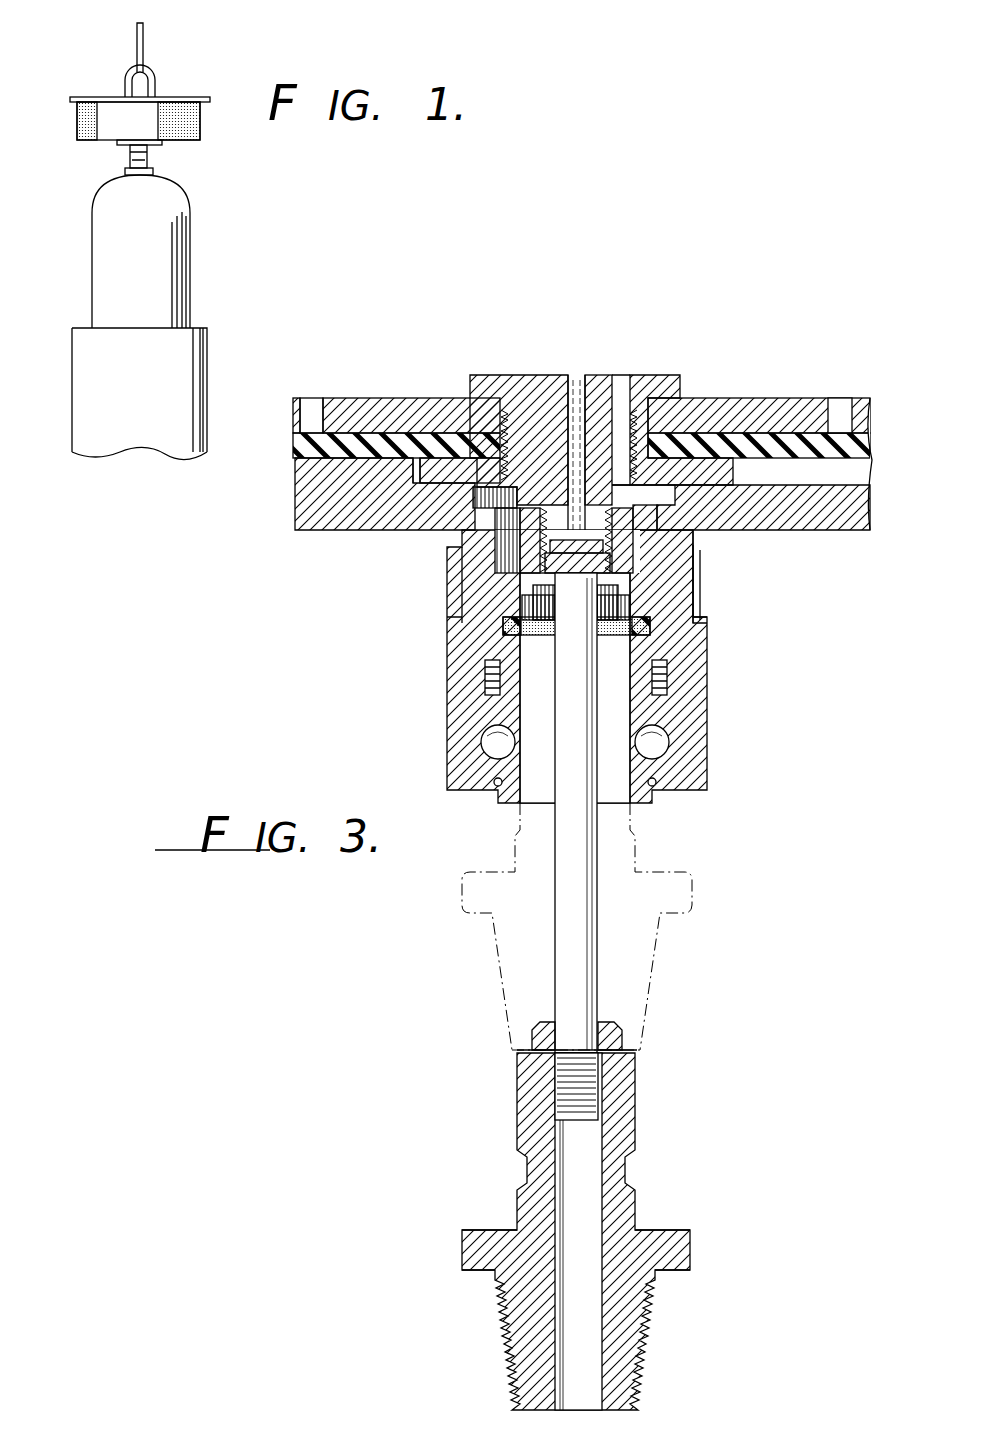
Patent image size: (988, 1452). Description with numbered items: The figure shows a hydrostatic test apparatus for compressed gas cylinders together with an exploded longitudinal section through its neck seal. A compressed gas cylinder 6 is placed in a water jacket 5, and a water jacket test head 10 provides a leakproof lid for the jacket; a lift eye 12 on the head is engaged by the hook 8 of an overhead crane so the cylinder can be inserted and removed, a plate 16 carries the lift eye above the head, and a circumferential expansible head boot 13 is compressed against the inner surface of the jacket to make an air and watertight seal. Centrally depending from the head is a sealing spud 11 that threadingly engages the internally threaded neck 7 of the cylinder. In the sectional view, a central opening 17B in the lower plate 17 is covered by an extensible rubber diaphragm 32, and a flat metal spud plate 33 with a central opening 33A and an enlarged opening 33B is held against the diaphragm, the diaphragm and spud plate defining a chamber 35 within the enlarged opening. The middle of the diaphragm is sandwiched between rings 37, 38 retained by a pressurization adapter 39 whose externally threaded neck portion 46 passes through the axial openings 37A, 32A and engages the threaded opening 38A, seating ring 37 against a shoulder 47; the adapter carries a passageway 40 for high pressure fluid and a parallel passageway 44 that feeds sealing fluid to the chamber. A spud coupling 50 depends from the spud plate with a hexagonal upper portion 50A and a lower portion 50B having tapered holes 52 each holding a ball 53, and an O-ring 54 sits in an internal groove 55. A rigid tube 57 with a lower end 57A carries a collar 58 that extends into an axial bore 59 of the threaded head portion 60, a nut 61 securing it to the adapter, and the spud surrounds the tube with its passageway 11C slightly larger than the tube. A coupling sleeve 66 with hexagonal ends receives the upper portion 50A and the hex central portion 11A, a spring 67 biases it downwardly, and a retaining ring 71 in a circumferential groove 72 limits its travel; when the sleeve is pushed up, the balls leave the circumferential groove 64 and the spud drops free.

In FIG. 1, the water jacket 5 is at (107, 353).
In FIG. 1, the compressed gas cylinder 6 is at (158, 262).
In FIG. 1, the internally threaded neck 7 is at (147, 168).
In FIG. 1, the hook 8 is at (135, 30).
In FIG. 1, the water jacket test head 10 is at (219, 78).
In FIG. 1, the lift eye 12 is at (157, 78).
In FIG. 1, the head boot 13 is at (77, 117).
In FIG. 1, the plate 16 is at (102, 97).
In FIG. 1, the coupling sleeve 66 is at (130, 157).
In FIG. 3, the coupling sleeve 66 is at (690, 680).
In FIG. 3, the sealing spud 11 is at (495, 935).
In FIG. 3, the central portion of spud 11A is at (680, 1250).
In FIG. 3, the passageway 11C is at (595, 1175).
In FIG. 3, the lower plate 17 is at (865, 400).
In FIG. 3, the central opening 17B is at (840, 400).
In FIG. 3, the diaphragm 32 is at (355, 425).
In FIG. 3, the axial opening in diaphragm 32A is at (690, 437).
In FIG. 3, the spud plate 33 is at (310, 500).
In FIG. 3, the central opening of spud plate 33A is at (474, 497).
In FIG. 3, the enlarged central opening 33B is at (412, 480).
In FIG. 3, the chamber 35 is at (680, 505).
In FIG. 3, the ring 37 is at (380, 405).
In FIG. 3, the axial opening in ring 37A is at (508, 385).
In FIG. 3, the ring 38 is at (445, 455).
In FIG. 3, the threaded opening 38A is at (505, 475).
In FIG. 3, the pressurization adapter 39 is at (600, 385).
In FIG. 3, the passageway 40 is at (572, 385).
In FIG. 3, the passageway 44 is at (625, 390).
In FIG. 3, the neck portion 46 is at (500, 420).
In FIG. 3, the shoulder 47 is at (462, 420).
In FIG. 3, the spud coupling 50 is at (480, 630).
In FIG. 3, the upper portion of spud coupling 50A is at (455, 580).
In FIG. 3, the lower portion of spud coupling 50B is at (640, 710).
In FIG. 3, the tapered holes 52 is at (480, 742).
In FIG. 3, the ball 53 is at (672, 742).
In FIG. 3, the O-ring 54 is at (700, 628).
In FIG. 3, the internal groove 55 is at (505, 628).
In FIG. 3, the tube 57 is at (580, 896).
In FIG. 3, the threaded stem end 57A is at (600, 1090).
In FIG. 3, the collar 58 is at (605, 572).
In FIG. 3, the axial bore 59 is at (605, 548).
In FIG. 3, the head portion 60 is at (495, 540).
In FIG. 3, the nut 61 is at (532, 585).
In FIG. 3, the circumferential groove 64 is at (525, 1170).
In FIG. 3, the spring 67 is at (470, 680).
In FIG. 3, the retaining ring 71 is at (495, 786).
In FIG. 3, the circumferential groove 72 is at (655, 786).